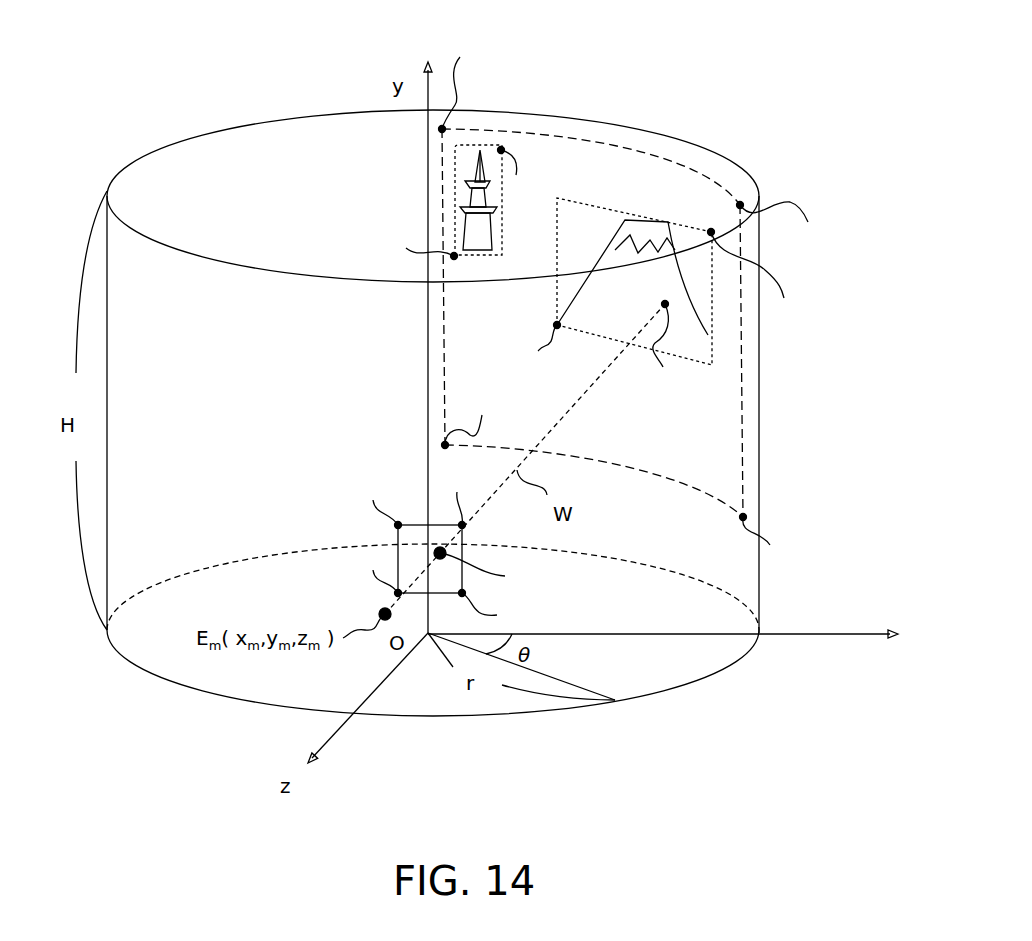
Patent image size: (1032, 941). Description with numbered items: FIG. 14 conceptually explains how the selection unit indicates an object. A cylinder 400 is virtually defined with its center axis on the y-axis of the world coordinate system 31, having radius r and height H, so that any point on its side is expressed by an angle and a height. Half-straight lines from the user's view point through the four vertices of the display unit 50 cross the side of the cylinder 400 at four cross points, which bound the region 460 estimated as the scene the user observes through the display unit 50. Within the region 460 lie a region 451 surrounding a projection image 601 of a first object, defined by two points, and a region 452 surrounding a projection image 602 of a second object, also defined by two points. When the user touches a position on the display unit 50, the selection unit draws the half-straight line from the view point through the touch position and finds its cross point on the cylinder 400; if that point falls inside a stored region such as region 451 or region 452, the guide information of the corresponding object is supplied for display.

The cylinder 400 is at (759, 468).
The region 460 is at (697, 170).
The region 452 is at (480, 255).
The region 451 is at (688, 352).
The projection image 602 is at (480, 150).
The projection image 601 is at (618, 232).
The display unit 50 is at (462, 536).
The world coordinate system 31 is at (803, 634).